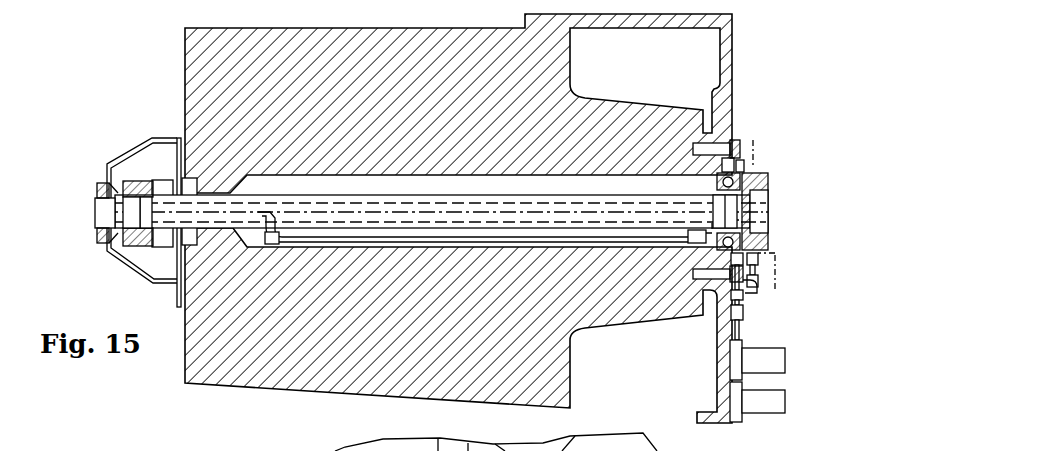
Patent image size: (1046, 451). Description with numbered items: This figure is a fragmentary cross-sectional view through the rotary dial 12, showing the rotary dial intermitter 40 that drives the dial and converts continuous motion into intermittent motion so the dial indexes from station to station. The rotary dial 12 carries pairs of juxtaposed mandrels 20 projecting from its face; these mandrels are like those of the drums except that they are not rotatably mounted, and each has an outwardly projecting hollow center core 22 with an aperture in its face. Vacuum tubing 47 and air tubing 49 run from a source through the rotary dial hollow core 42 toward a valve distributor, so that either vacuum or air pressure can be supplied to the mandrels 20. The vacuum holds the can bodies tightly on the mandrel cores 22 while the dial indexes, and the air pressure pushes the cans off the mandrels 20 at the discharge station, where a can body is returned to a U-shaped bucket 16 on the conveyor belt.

The rotary dial 12 is at (720, 31).
The U-shaped bucket 16 is at (753, 140).
The mandrel 20 is at (733, 423).
The hollow center core 22 is at (760, 411).
The rotary dial intermitter 40 is at (139, 183).
The rotary dial hollow core 42 is at (508, 250).
The vacuum tubing 47 is at (385, 220).
The air tubing 49 is at (400, 241).